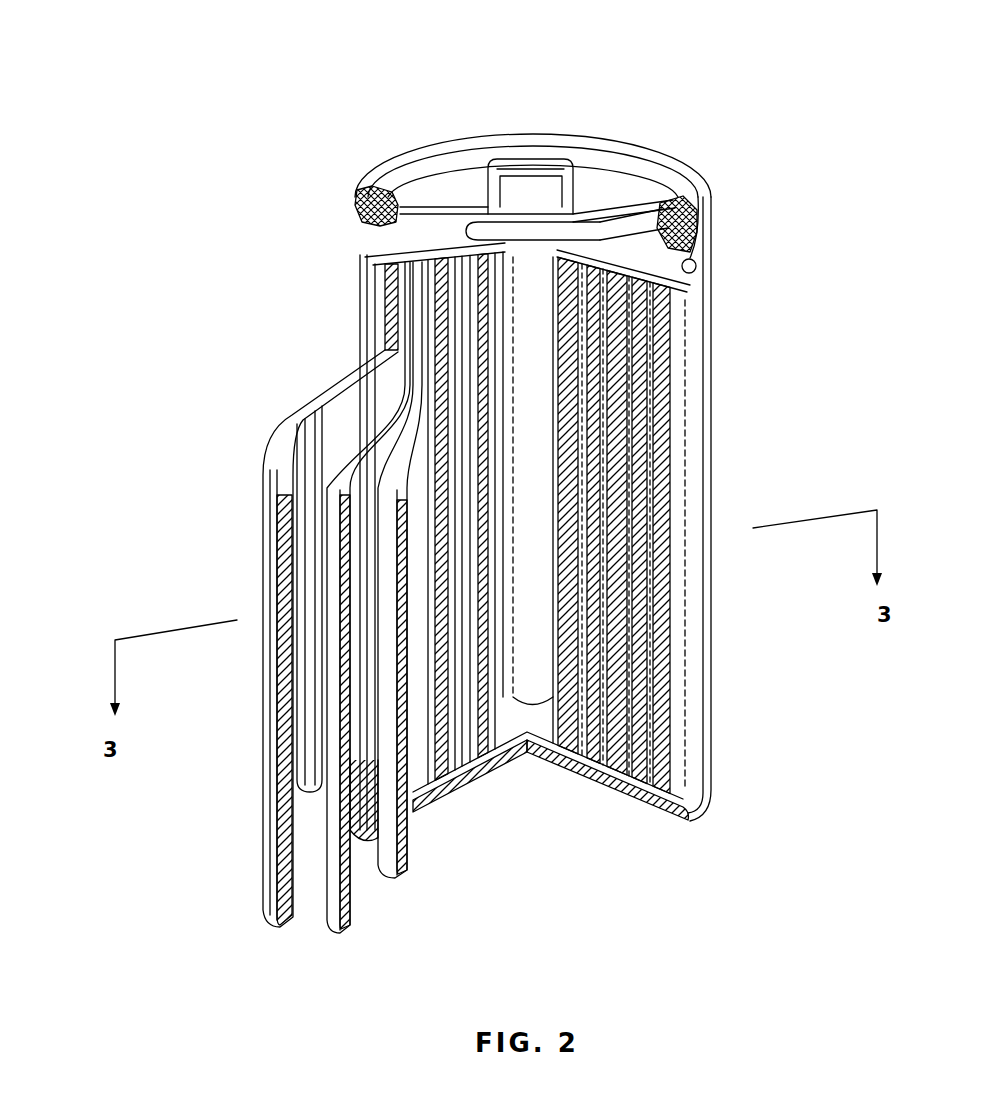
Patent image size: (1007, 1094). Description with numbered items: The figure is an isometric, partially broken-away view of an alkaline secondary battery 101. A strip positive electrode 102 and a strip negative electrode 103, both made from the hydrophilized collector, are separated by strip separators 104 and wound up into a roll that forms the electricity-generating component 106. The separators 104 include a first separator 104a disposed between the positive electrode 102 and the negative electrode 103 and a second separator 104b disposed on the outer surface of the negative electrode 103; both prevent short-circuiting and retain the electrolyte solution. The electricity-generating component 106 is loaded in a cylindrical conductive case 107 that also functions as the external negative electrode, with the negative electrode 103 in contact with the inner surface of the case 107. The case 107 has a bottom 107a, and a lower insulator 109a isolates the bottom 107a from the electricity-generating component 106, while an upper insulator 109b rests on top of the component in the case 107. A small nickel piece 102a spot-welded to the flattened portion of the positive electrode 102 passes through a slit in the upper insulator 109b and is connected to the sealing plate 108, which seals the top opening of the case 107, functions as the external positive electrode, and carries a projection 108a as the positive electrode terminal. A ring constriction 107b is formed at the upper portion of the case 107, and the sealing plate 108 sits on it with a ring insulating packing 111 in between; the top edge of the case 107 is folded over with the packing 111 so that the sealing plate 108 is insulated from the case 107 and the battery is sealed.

The alkaline secondary battery 101 is at (188, 44).
The strip positive electrode 102 is at (393, 760).
The nickel piece 102a is at (617, 218).
The strip negative electrode 103 is at (278, 552).
The strip separators 104 is at (140, 316).
The first separator 104a is at (300, 409).
The second separator 104b is at (357, 313).
The electricity-generating component 106 is at (683, 500).
The conductive case 107 is at (712, 357).
The bottom 107a is at (622, 798).
The ring constriction 107b is at (705, 266).
The sealing plate 108 is at (607, 205).
The projection 108a is at (528, 157).
The lower insulator 109a is at (557, 772).
The upper insulator 109b is at (400, 259).
The ring insulating packing 111 is at (362, 192).